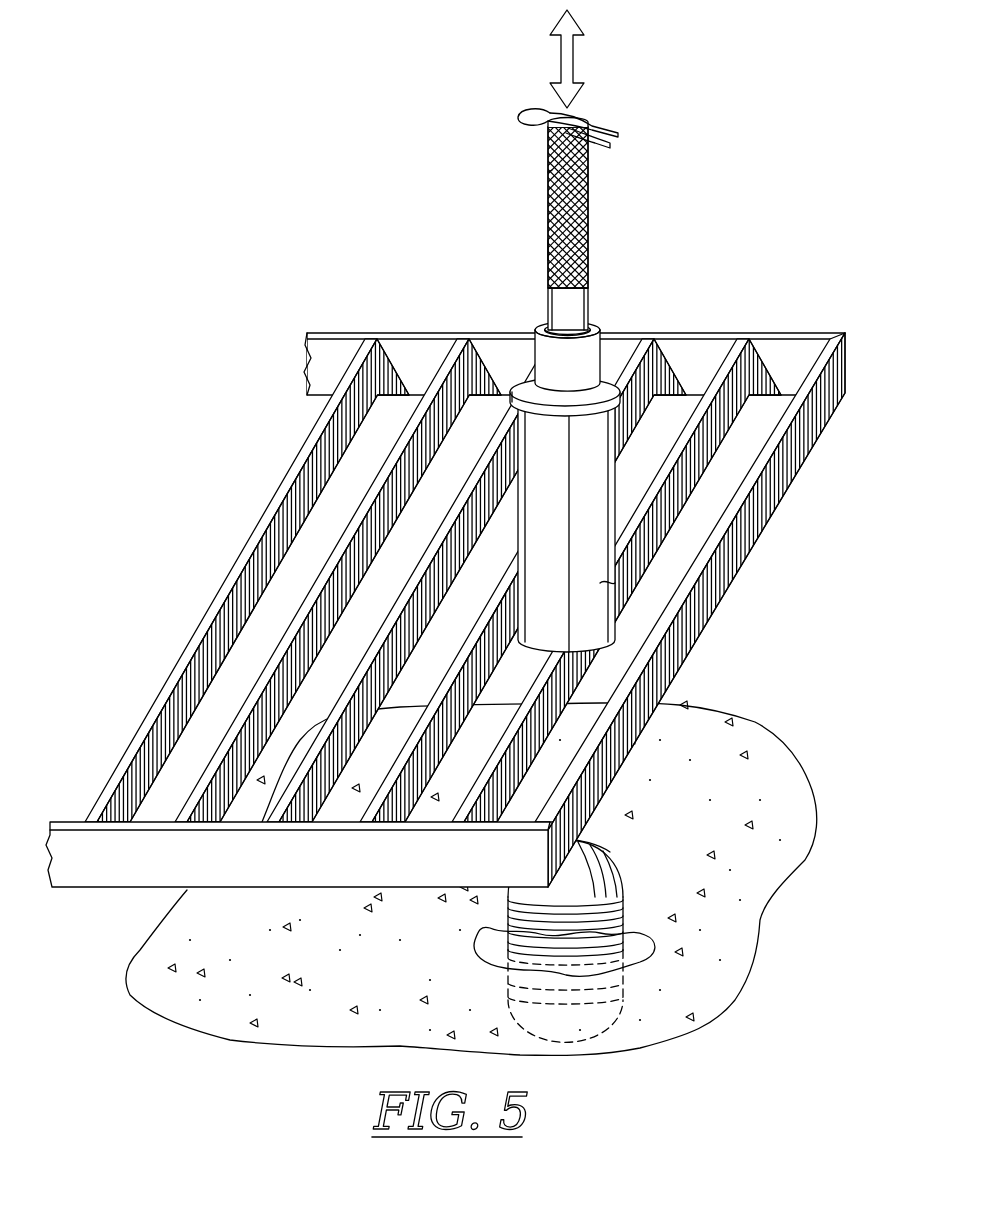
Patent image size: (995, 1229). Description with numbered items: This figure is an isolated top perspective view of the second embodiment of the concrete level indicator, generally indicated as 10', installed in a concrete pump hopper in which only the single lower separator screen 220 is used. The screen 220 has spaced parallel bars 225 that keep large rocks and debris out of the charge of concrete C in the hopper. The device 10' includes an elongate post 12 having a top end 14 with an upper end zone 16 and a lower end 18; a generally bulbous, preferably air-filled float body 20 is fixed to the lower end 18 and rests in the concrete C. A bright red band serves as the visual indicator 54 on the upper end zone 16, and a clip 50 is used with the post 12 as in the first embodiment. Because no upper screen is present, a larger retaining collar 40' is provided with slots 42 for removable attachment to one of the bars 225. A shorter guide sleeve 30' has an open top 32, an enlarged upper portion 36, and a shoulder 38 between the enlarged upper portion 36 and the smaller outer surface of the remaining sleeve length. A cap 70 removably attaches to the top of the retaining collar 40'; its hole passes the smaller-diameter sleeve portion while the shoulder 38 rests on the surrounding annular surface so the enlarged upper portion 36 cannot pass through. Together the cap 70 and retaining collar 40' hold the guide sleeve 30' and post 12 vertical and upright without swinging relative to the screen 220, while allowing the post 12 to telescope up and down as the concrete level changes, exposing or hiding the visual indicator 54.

The float level indicator 10' is at (496, 242).
The elongate post 12 is at (570, 387).
The top end 14 is at (578, 122).
The upper end zone 16 is at (580, 212).
The lower end 18 is at (585, 838).
The float body 20 is at (597, 870).
The guide sleeve 30' is at (542, 337).
The open top 32 is at (542, 352).
The enlarged upper portion 36 is at (583, 371).
The shoulder 38 is at (517, 397).
The retaining collar 40' is at (600, 526).
The slots 42 is at (588, 585).
The clip 50 is at (526, 110).
The visual indicator 54 is at (548, 172).
The cap 70 is at (627, 337).
The first separator screen 220 is at (448, 578).
The parallel bars 225 is at (375, 495).
The concrete C is at (765, 750).